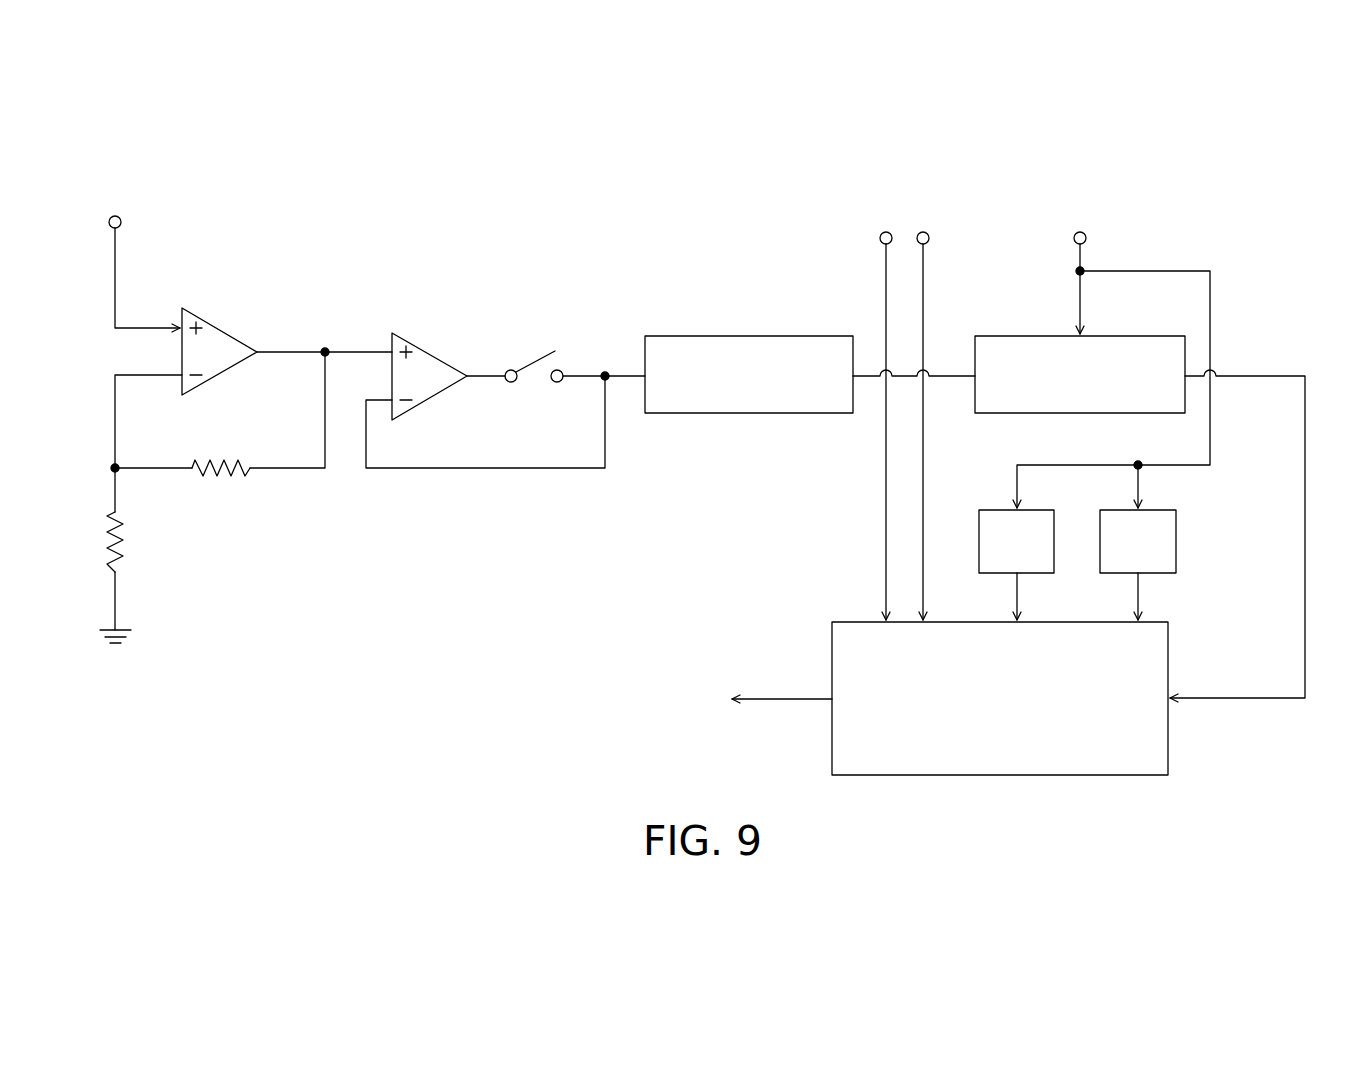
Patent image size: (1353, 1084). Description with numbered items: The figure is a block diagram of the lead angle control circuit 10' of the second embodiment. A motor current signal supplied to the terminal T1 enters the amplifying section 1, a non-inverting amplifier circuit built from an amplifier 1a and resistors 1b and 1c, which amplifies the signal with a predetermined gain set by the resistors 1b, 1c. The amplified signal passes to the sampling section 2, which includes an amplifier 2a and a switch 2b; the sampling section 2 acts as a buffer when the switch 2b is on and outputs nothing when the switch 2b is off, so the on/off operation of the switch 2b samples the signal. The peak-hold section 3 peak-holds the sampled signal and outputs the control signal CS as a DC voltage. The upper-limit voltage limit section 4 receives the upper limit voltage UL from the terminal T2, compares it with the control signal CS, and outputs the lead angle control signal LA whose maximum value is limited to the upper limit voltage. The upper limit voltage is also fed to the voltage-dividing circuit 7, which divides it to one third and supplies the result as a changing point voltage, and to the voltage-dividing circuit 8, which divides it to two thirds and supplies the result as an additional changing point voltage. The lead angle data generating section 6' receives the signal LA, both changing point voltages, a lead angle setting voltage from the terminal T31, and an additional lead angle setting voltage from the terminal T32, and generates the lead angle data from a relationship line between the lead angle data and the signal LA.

The amplifying section 1 is at (280, 302).
The amplifier 1a is at (215, 324).
The resistor 1b is at (216, 480).
The resistor 1c is at (121, 542).
The sampling section 2 is at (492, 313).
The amplifier 2a is at (427, 347).
The switch 2b is at (534, 362).
The peak-hold section 3 is at (752, 336).
The upper-limit voltage limit section 4 is at (1018, 336).
The lead angle data generating section 6' is at (1035, 698).
The voltage-dividing circuit 7 is at (997, 510).
The voltage-dividing circuit 8 is at (1176, 540).
The lead angle control circuit 10' is at (702, 477).
The terminal T1 is at (121, 222).
The terminal T2 is at (1086, 238).
The terminal T31 is at (880, 239).
The terminal T32 is at (929, 238).